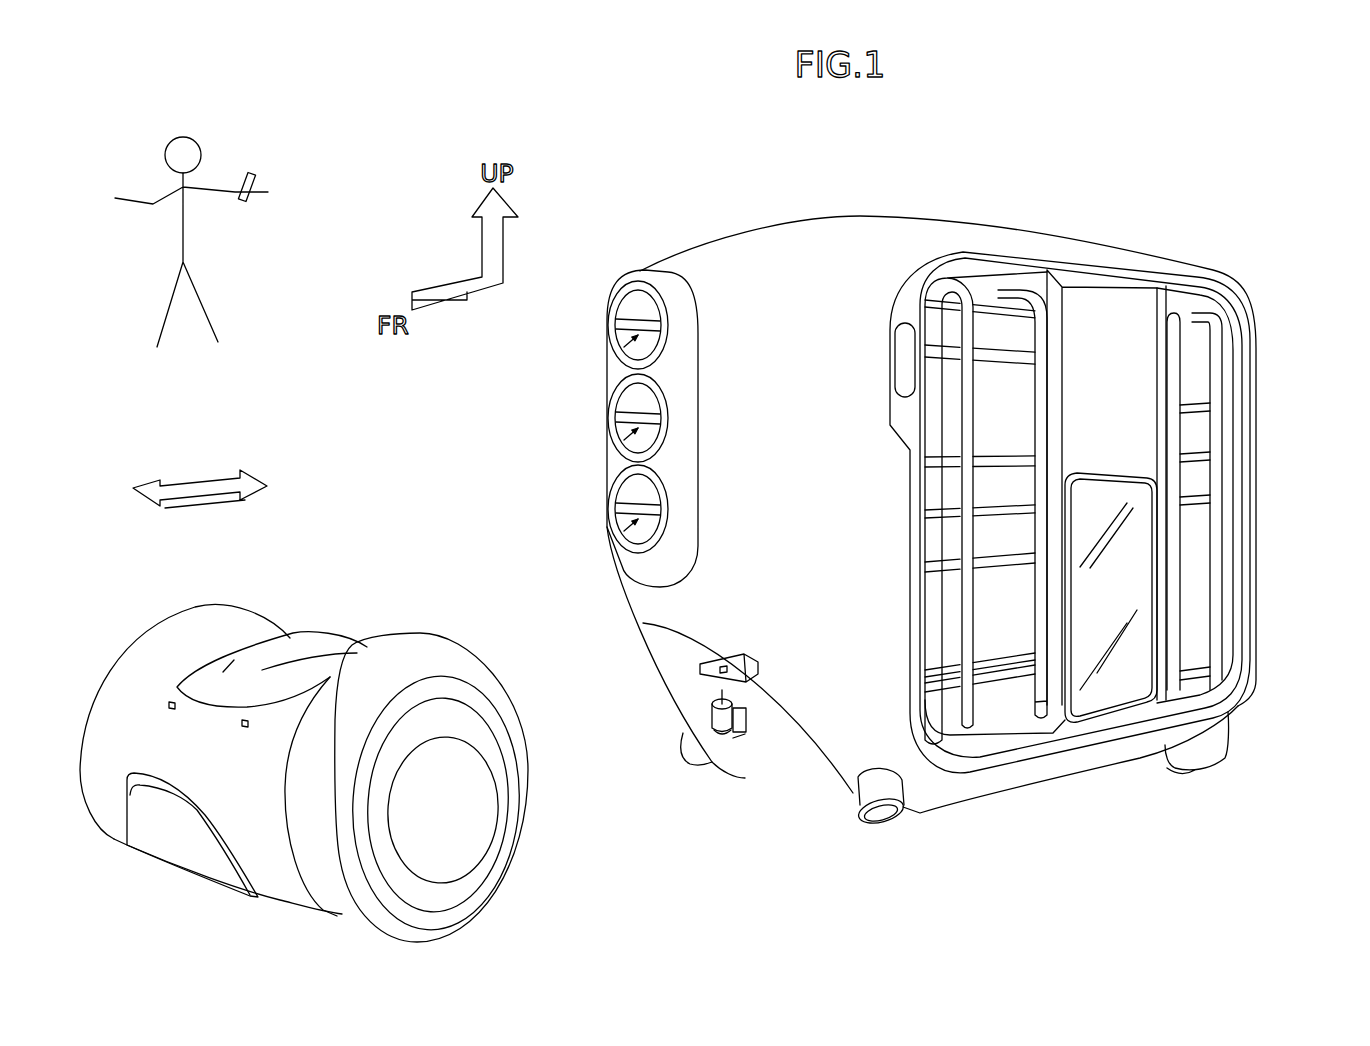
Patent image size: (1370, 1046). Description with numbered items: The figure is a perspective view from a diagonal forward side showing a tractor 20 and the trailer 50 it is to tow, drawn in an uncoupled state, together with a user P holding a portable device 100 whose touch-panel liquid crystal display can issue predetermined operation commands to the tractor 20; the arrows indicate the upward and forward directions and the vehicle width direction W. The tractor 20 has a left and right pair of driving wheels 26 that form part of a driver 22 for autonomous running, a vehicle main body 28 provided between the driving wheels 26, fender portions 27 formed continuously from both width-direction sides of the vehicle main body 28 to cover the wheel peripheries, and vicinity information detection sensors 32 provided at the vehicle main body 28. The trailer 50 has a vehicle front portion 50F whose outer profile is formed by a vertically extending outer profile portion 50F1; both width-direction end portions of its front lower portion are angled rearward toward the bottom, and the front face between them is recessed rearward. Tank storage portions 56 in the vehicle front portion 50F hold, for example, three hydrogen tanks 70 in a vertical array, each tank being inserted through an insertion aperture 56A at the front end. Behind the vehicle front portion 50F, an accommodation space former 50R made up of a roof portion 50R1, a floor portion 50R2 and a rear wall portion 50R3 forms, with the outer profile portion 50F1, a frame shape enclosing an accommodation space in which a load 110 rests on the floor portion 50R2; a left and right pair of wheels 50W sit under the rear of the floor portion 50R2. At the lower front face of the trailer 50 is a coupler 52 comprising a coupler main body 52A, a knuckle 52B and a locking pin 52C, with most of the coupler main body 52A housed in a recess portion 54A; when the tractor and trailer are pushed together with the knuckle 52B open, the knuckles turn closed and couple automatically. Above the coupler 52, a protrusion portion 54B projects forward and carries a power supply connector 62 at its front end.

The portable device 100 is at (257, 188).
The user P is at (185, 235).
The width direction W is at (212, 497).
The tractor 20 is at (340, 716).
The driver 22 is at (340, 755).
The driving wheels 26 is at (112, 846).
The fender portions 27 is at (194, 621).
The vehicle main body 28 is at (359, 621).
The vicinity information detection sensors 32 is at (169, 708).
The trailer 50 is at (924, 482).
The vehicle front portion 50F is at (630, 351).
The outer profile portion 50F1 is at (737, 283).
The accommodation space former 50R is at (1124, 496).
The roof portion 50R1 is at (1123, 258).
The floor portion 50R2 is at (1080, 762).
The rear wall portion 50R3 is at (1262, 466).
The wheels 50W is at (1185, 775).
The tank storage portions 56 is at (579, 388).
The insertion aperture 56A is at (610, 302).
The hydrogen tanks 70 is at (622, 356).
The load 110 is at (1000, 705).
The coupler 52 is at (740, 738).
The coupler main body 52A is at (745, 702).
The knuckle 52B is at (725, 732).
The locking pin 52C is at (735, 690).
The recess portion 54A is at (733, 740).
The protrusion portion 54B is at (727, 668).
The power supply connector 62 is at (723, 655).